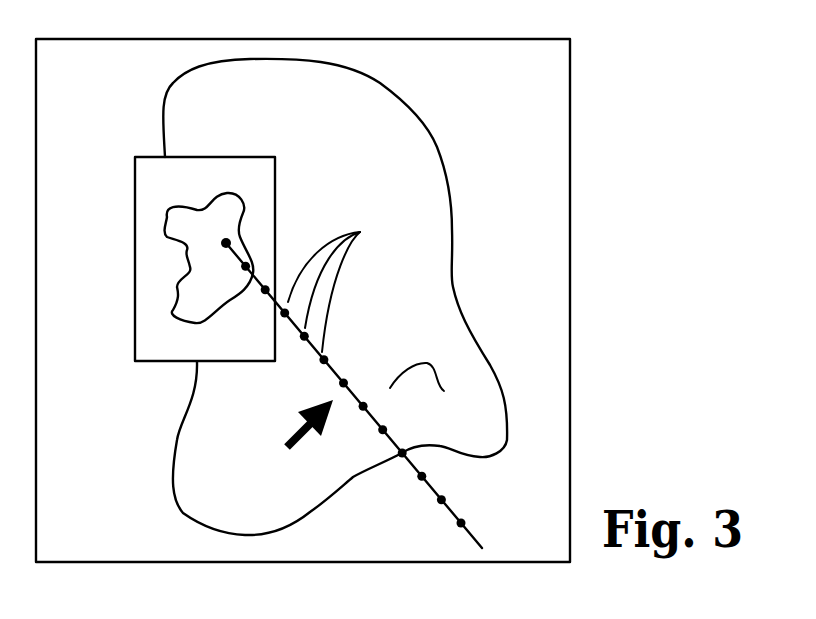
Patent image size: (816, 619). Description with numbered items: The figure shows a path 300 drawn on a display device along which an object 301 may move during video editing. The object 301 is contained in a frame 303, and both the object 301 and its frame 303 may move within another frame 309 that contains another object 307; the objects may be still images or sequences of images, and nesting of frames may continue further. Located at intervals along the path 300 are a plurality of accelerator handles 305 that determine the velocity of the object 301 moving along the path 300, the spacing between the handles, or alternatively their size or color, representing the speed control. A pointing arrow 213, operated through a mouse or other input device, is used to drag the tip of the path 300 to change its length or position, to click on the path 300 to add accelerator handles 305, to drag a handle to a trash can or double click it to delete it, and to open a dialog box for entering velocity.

The pointing arrow 213 is at (293, 431).
The path 300 is at (446, 389).
The object 301 is at (173, 230).
The frame 303 is at (182, 363).
The accelerator handles 305 is at (360, 232).
The another object 307 is at (292, 77).
The another frame 309 is at (368, 38).